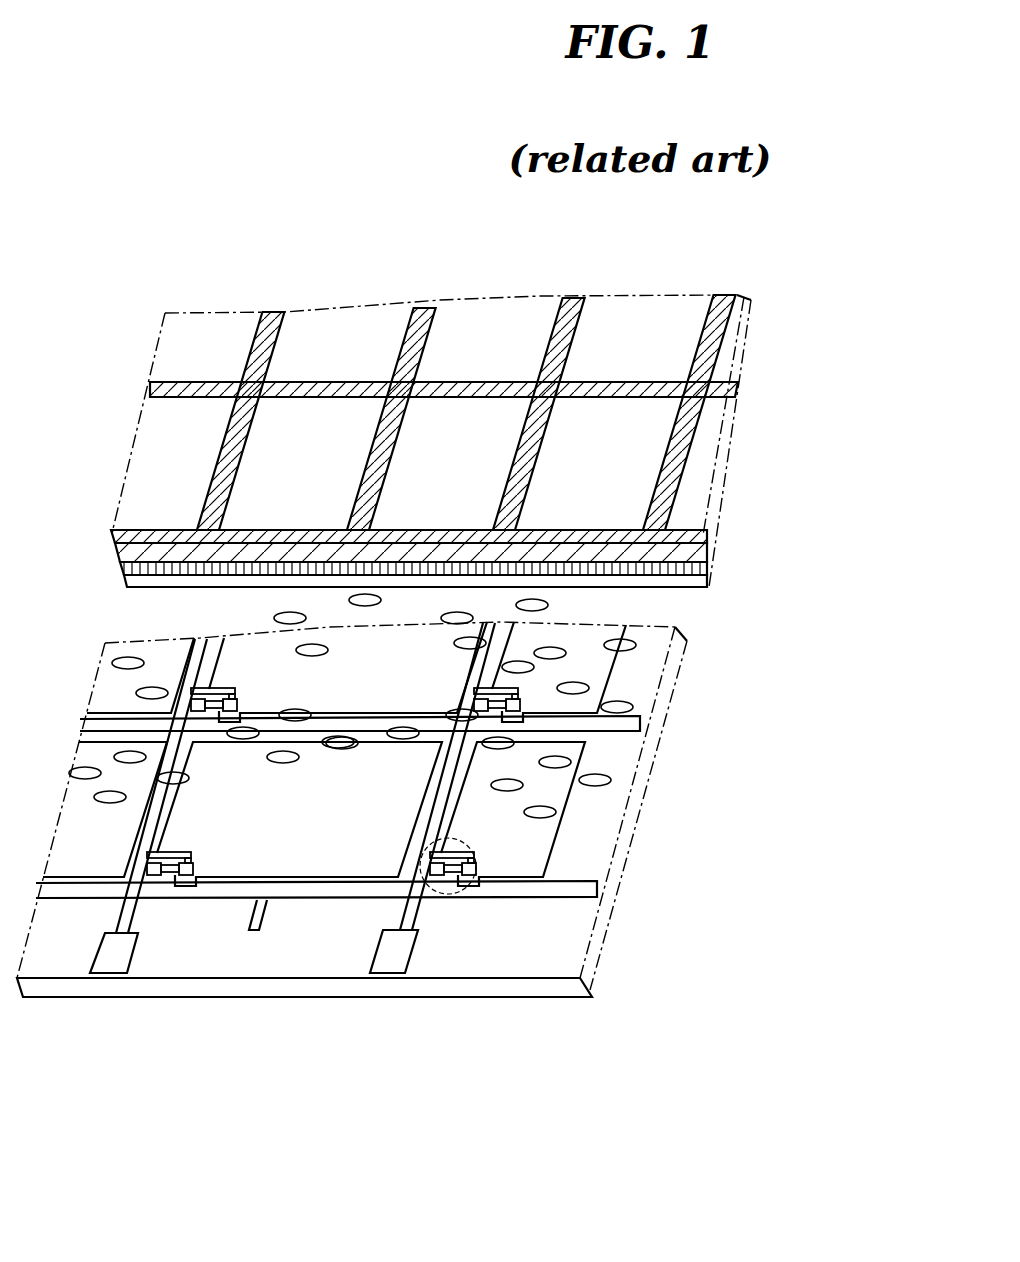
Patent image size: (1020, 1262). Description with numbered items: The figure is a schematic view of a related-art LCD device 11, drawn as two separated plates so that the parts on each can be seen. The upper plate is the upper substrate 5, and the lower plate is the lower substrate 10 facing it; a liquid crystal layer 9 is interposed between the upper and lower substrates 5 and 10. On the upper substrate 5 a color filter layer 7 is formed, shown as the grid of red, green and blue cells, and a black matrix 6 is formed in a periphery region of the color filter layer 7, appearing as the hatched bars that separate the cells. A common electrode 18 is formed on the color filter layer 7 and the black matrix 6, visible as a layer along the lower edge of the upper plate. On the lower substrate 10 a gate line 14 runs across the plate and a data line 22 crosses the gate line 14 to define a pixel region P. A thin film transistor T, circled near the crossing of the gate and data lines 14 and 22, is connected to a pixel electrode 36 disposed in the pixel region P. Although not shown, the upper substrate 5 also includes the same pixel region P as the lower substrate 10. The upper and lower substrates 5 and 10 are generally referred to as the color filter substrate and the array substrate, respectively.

The color filter layer 7 is at (680, 353).
The black matrix 6 is at (723, 390).
The upper substrate 5 is at (703, 547).
The common electrode 18 is at (703, 582).
The liquid crystal layer 9 is at (602, 705).
The pixel region P is at (588, 815).
The pixel electrode 36 is at (392, 760).
The gate line 14 is at (587, 893).
The LCD device 11 is at (444, 848).
The thin film transistor T is at (468, 893).
The data line 22 is at (383, 930).
The lower substrate 10 is at (566, 985).